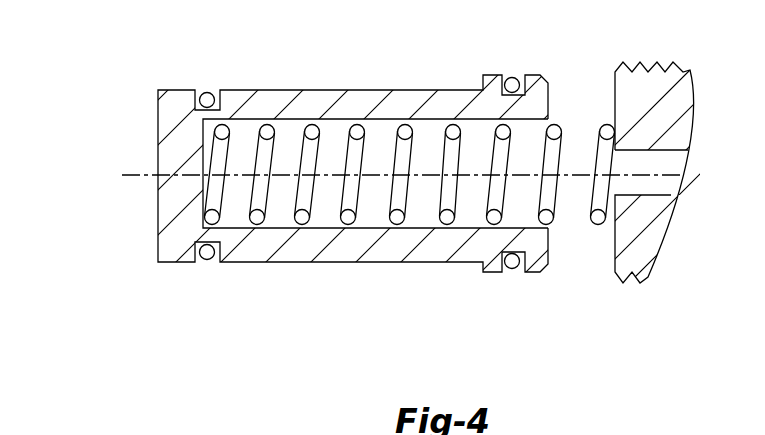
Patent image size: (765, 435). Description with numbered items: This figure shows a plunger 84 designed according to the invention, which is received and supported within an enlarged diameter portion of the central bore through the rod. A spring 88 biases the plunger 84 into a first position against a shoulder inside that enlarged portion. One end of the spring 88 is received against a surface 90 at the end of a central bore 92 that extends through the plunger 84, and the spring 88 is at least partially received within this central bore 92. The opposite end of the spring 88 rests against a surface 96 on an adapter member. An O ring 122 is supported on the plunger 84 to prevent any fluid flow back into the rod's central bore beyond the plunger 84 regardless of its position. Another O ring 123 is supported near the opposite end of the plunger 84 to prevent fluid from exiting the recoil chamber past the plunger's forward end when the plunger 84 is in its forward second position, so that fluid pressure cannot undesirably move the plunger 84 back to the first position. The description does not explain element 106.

The plunger 84 is at (306, 261).
The spring 88 is at (405, 197).
The surface 90 is at (203, 143).
The central bore 92 is at (475, 223).
The surface 96 is at (615, 250).
The member 106 is at (292, 434).
The O ring 122 is at (210, 92).
The O ring 123 is at (510, 78).